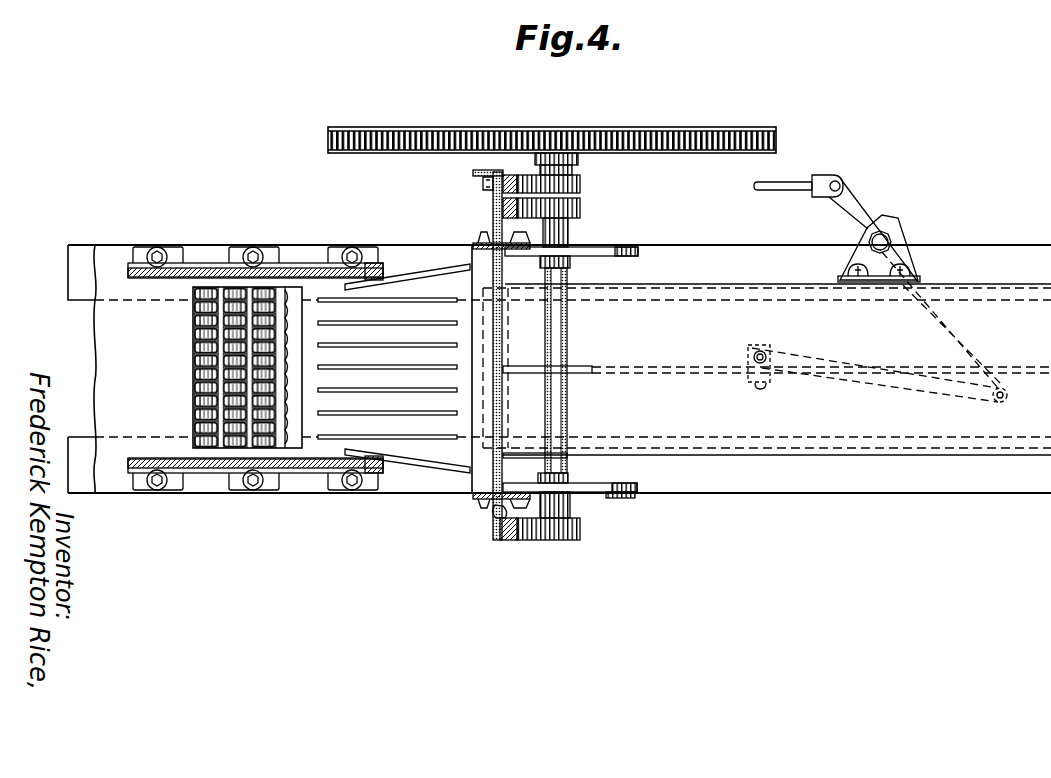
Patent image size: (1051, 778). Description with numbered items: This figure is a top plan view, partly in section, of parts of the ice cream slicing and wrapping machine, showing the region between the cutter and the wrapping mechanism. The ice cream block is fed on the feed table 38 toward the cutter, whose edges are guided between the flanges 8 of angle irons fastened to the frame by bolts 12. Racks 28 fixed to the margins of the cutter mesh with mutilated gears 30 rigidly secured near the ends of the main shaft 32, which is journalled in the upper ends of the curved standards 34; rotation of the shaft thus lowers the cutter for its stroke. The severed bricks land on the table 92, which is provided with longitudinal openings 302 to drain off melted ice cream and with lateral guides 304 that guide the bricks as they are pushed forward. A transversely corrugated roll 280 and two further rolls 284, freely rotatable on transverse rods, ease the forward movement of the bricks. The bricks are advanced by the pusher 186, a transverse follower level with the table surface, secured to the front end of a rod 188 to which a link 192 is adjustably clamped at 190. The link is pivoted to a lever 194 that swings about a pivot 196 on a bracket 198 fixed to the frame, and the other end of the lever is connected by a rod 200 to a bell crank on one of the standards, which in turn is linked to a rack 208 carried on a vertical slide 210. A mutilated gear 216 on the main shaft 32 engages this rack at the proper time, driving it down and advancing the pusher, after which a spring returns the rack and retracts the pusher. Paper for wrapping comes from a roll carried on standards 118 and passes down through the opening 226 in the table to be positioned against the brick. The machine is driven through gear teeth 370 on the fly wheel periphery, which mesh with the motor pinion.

The flanges 8 is at (497, 232).
The bolts 12 is at (490, 239).
The racks 28 is at (504, 199).
The mutilated gears 30 is at (582, 210).
The shaft 32 is at (568, 408).
The curved standards 34 is at (605, 250).
The feed table 38 is at (990, 292).
The table 92 is at (105, 366).
The standards 118 is at (188, 268).
The pusher 186 is at (483, 403).
The rod 188 is at (693, 370).
The clamp 190 is at (770, 382).
The link 192 is at (913, 392).
The lever 194 is at (858, 204).
The pivot 196 is at (886, 236).
The bracket 198 is at (855, 258).
The rod 200 is at (779, 192).
The rack 208 is at (508, 190).
The vertical slide 210 is at (480, 171).
The mutilated gear 216 is at (582, 186).
The opening 226 is at (288, 433).
The roll 280 is at (275, 386).
The rolls 284 is at (212, 336).
The longitudinal openings 302 is at (383, 301).
The lateral guides 304 is at (400, 265).
The gear teeth 370 is at (650, 130).